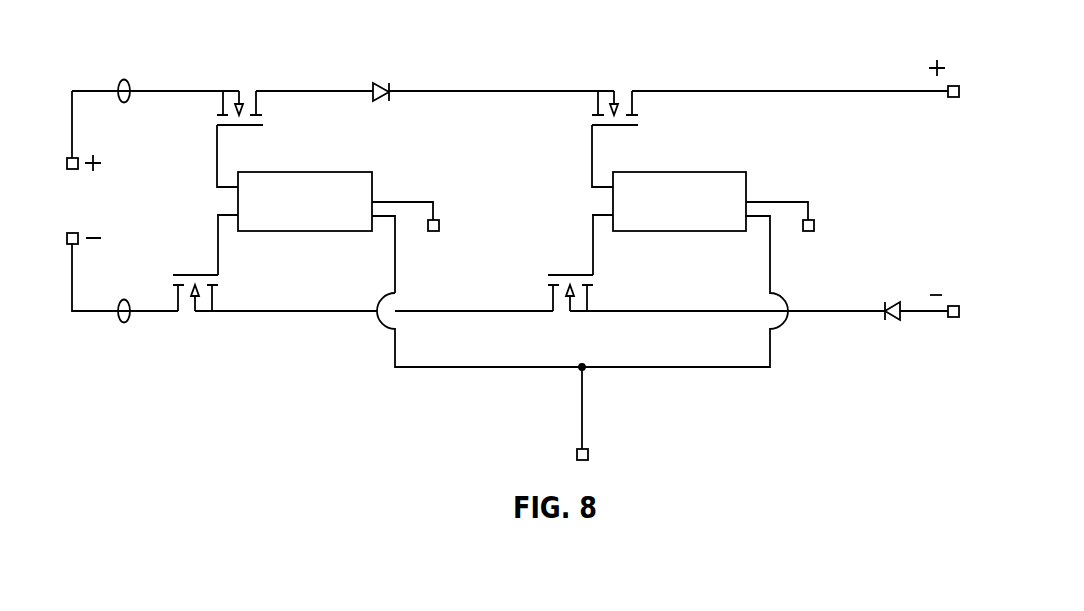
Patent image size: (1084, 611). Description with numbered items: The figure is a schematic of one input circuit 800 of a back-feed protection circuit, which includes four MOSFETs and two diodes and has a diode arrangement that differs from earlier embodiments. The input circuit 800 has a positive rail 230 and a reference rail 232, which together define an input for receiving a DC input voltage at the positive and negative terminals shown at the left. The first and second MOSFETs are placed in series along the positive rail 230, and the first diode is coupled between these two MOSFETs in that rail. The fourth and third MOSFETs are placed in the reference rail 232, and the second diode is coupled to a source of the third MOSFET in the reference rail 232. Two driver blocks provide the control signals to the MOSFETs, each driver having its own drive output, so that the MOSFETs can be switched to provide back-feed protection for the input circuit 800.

The input circuit 800 is at (511, 230).
The positive rail 230 is at (123, 79).
The reference rail 232 is at (124, 323).